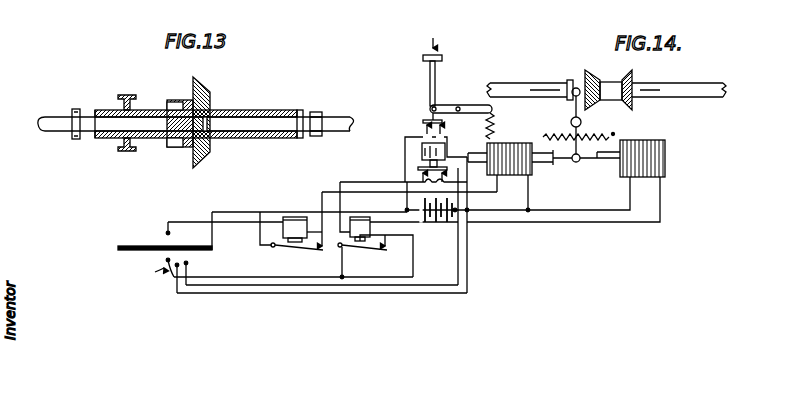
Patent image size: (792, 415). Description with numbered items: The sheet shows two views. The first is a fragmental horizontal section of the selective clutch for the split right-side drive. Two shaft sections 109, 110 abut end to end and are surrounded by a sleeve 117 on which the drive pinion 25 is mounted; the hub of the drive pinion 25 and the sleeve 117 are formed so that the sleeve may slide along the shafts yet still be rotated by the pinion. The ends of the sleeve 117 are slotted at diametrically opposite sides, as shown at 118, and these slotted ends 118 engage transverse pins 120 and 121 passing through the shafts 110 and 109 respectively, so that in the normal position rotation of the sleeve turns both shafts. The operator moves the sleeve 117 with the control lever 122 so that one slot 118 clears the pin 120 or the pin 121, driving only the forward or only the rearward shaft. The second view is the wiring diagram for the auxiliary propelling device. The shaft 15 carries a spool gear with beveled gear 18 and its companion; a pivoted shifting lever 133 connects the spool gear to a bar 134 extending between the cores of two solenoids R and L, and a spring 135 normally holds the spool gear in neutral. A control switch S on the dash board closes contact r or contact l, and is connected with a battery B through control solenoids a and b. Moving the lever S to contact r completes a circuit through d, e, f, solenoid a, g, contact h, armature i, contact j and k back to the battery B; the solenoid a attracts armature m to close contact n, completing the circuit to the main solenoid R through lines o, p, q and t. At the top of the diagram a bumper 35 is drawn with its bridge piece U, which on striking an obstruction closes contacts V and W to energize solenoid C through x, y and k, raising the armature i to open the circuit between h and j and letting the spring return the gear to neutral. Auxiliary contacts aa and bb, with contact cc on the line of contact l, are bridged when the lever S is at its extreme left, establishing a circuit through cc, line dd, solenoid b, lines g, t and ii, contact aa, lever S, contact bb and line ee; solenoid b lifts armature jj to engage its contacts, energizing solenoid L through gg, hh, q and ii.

In FIG. 13, the shaft section 109 is at (70, 128).
In FIG. 13, the shaft section 110 is at (345, 124).
In FIG. 13, the sleeve 117 is at (262, 110).
In FIG. 13, the slotted ends 118 is at (92, 109).
In FIG. 13, the pin 120 is at (322, 114).
In FIG. 13, the pin 121 is at (76, 108).
In FIG. 13, the control lever 122 is at (130, 94).
In FIG. 13, the drive pinion 25 is at (206, 100).
In FIG. 14, the plunger 35 is at (436, 78).
In FIG. 14, the shaft 15 is at (694, 97).
In FIG. 14, the beveled gear 18 is at (590, 105).
In FIG. 14, the shifting arm or lever 133 is at (575, 105).
In FIG. 14, the bar 134 is at (578, 160).
In FIG. 14, the spring 135 is at (590, 138).
In FIG. 14, the bridge piece U is at (432, 108).
In FIG. 14, the contact V is at (425, 132).
In FIG. 14, the contact W is at (442, 133).
In FIG. 14, the line x is at (405, 140).
In FIG. 14, the solenoid C is at (445, 152).
In FIG. 14, the armature i is at (422, 152).
In FIG. 14, the contact h is at (418, 168).
In FIG. 14, the line y is at (455, 157).
In FIG. 14, the contact j is at (456, 168).
In FIG. 14, the line o is at (338, 183).
In FIG. 14, the line g is at (378, 184).
In FIG. 14, the line k is at (467, 200).
In FIG. 14, the line e is at (252, 212).
In FIG. 14, the line f is at (232, 223).
In FIG. 14, the contact r is at (166, 232).
In FIG. 14, the control switch S is at (124, 245).
In FIG. 14, the contact l is at (166, 260).
In FIG. 14, the auxiliary contact cc is at (148, 276).
In FIG. 14, the contact aa is at (176, 278).
In FIG. 14, the contact bb is at (188, 263).
In FIG. 14, the line dd is at (268, 277).
In FIG. 14, the line ee is at (268, 293).
In FIG. 14, the line ii is at (338, 293).
In FIG. 14, the solenoid a is at (293, 216).
In FIG. 14, the solenoid b is at (368, 222).
In FIG. 14, the line d is at (379, 211).
In FIG. 14, the armature m is at (298, 248).
In FIG. 14, the contact n is at (321, 250).
In FIG. 14, the armature jj is at (366, 249).
In FIG. 14, the contact ff is at (386, 250).
In FIG. 14, the battery B is at (436, 216).
In FIG. 14, the line t is at (470, 218).
In FIG. 14, the line q is at (518, 223).
In FIG. 14, the line gg is at (577, 223).
In FIG. 14, the line p is at (530, 196).
In FIG. 14, the line hh is at (592, 198).
In FIG. 14, the solenoid R is at (508, 142).
In FIG. 14, the solenoid L is at (650, 143).